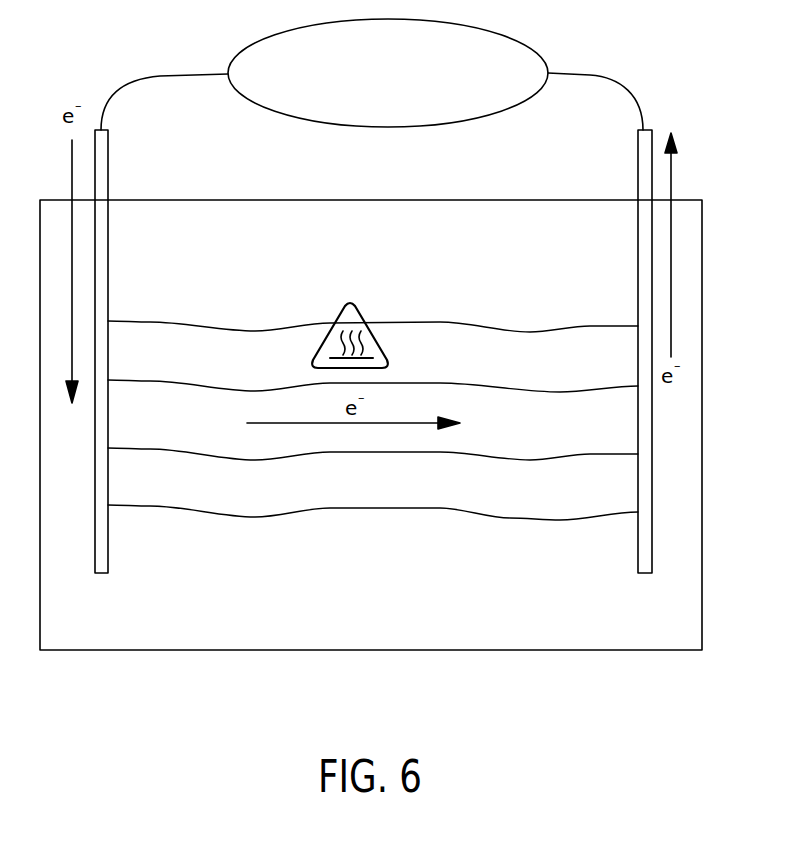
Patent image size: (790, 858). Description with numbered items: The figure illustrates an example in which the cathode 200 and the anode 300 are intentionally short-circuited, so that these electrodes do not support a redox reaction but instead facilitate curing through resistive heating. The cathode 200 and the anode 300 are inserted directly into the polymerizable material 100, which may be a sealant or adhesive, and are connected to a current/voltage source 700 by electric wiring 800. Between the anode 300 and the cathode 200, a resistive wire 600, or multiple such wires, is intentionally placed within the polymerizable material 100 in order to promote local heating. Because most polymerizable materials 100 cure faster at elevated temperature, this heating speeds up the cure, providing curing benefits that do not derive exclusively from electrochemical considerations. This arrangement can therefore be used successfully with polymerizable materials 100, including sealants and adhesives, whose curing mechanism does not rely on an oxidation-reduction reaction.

The polymerizable material 100 is at (505, 636).
The cathode 200 is at (102, 592).
The anode 300 is at (643, 592).
The resistive wire 600 is at (268, 517).
The current/voltage source 700 is at (402, 88).
The electric wiring 800 is at (617, 78).